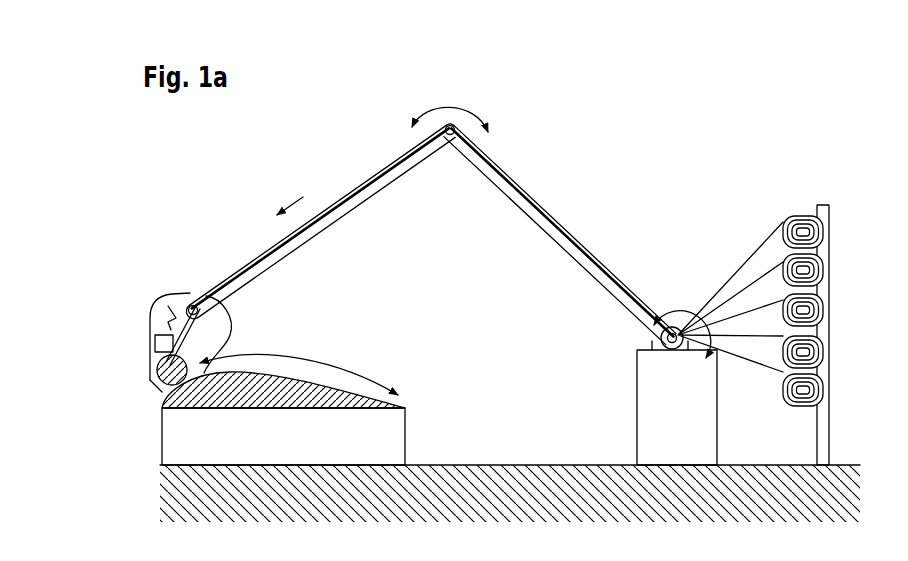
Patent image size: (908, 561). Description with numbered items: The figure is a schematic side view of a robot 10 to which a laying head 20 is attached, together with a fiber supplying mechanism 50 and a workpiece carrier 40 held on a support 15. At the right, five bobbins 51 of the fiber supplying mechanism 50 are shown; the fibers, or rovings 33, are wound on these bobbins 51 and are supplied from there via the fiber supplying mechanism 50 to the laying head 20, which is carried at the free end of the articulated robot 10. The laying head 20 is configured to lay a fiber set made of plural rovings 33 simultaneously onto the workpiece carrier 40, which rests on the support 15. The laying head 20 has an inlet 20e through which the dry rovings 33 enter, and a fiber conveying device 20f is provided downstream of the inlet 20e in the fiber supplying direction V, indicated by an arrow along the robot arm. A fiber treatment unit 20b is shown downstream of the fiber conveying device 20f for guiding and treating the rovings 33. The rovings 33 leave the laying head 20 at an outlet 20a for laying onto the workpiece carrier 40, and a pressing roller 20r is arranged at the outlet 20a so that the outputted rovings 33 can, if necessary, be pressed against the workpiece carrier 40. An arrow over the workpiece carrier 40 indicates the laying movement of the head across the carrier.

The robot 10 is at (451, 243).
The fiber supplying mechanism 50 is at (598, 197).
The bobbins 51 is at (798, 216).
The rovings 33 is at (728, 272).
The workpiece carrier 40 is at (377, 367).
The support 15 is at (285, 445).
The laying head 20 is at (143, 305).
The inlet 20e is at (196, 288).
The fiber conveying device 20f is at (170, 316).
The fiber treatment unit 20b is at (155, 345).
The pressing roller 20r is at (157, 370).
The outlet 20a is at (160, 391).